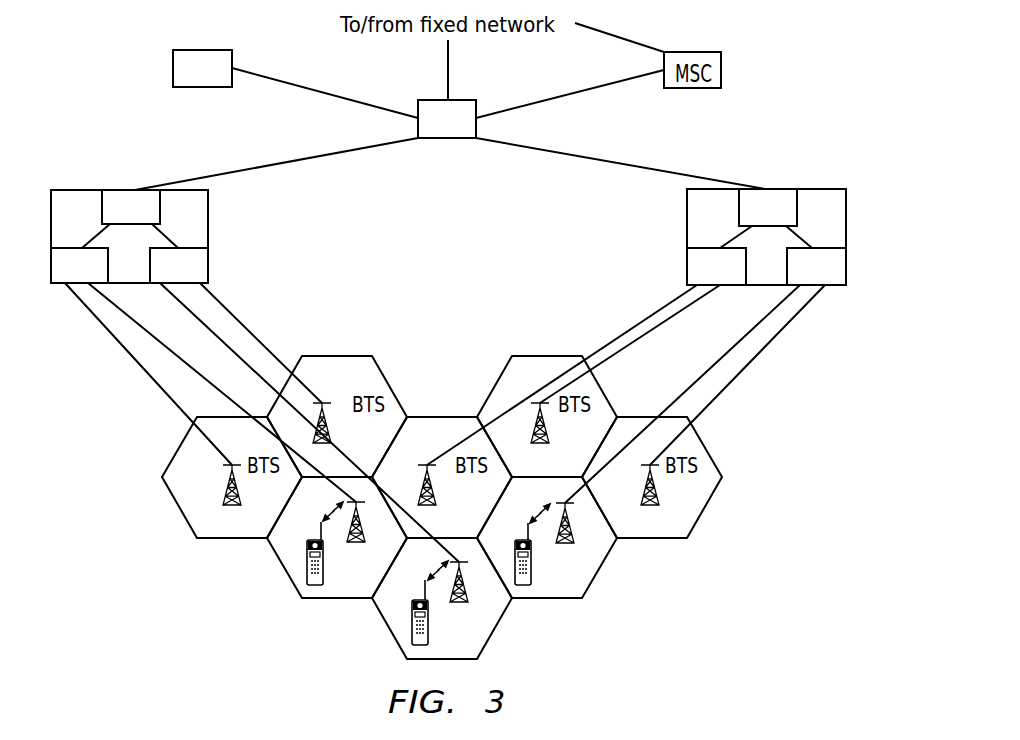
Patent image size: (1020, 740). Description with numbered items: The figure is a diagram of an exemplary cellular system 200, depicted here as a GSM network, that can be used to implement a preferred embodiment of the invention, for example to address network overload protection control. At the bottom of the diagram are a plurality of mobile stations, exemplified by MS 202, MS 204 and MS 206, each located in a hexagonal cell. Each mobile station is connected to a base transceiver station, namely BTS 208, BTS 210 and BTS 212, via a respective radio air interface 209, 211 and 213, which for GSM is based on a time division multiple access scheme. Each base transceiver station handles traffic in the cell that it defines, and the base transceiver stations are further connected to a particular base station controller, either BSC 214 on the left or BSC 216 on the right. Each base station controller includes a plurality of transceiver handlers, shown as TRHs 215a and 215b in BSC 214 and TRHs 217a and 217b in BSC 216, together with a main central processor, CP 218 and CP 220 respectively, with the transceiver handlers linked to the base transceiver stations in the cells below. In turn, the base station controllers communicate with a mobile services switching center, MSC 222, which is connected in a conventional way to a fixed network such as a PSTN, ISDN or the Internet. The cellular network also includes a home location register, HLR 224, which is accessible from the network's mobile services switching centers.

The cellular system 200 is at (100, 92).
The mobile station 202 is at (302, 587).
The mobile station 204 is at (410, 643).
The mobile station 206 is at (530, 583).
The base transceiver station 208 is at (385, 547).
The radio air interface 209 is at (337, 505).
The base transceiver station 210 is at (468, 603).
The radio air interface 211 is at (438, 573).
The base transceiver station 212 is at (572, 543).
The radio air interface 213 is at (547, 512).
The base station controller 214 is at (208, 235).
The transceiver handler 215a is at (88, 285).
The transceiver handler 215b is at (208, 278).
The base station controller 216 is at (687, 226).
The transceiver handler 217a is at (687, 277).
The transceiver handler 217b is at (846, 285).
The main central processor 218 is at (128, 189).
The main central processor 220 is at (771, 189).
The mobile services switching center 222 is at (452, 100).
The home location register 224 is at (232, 60).